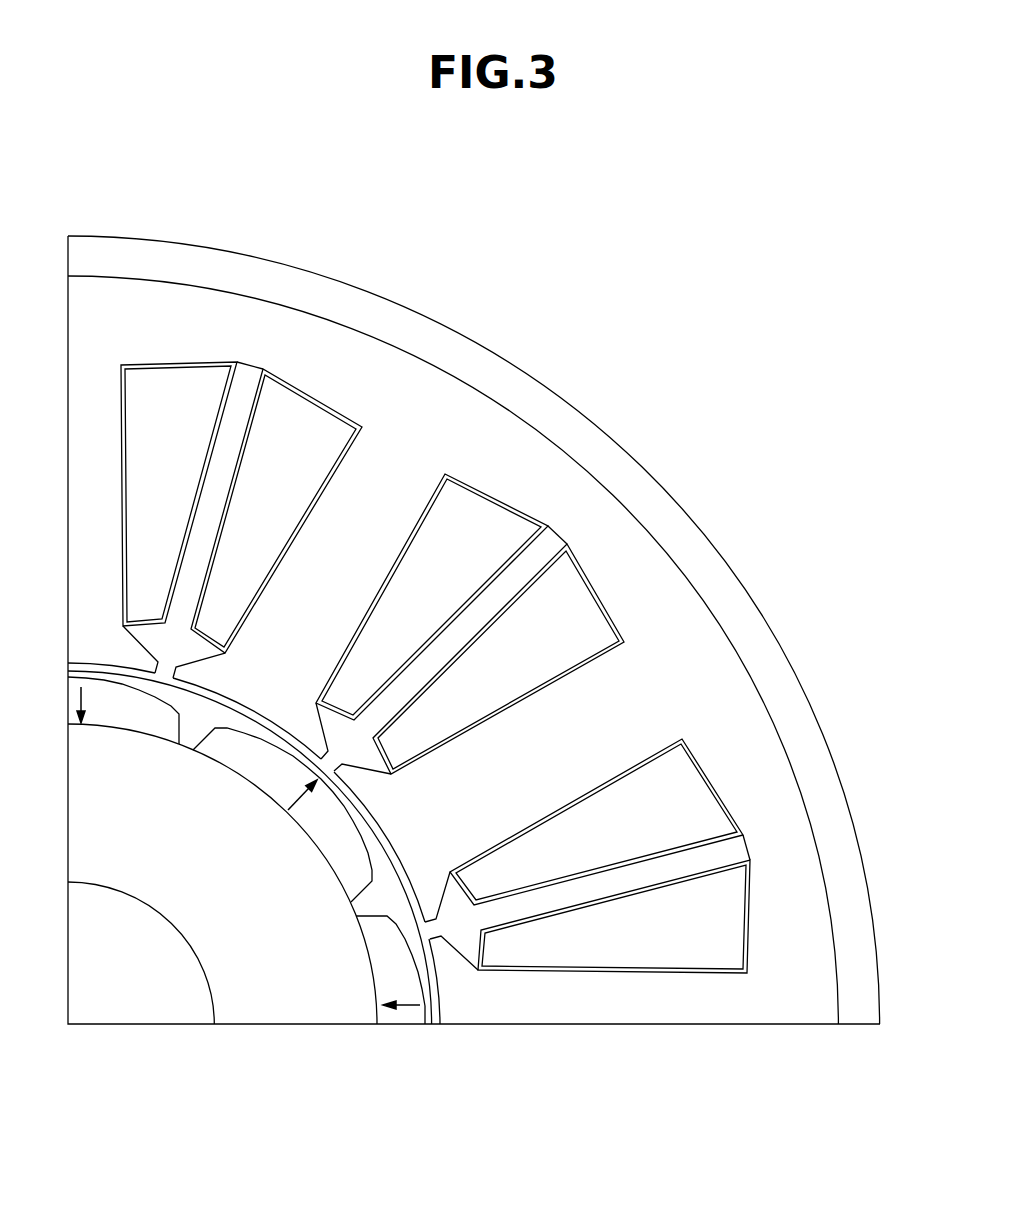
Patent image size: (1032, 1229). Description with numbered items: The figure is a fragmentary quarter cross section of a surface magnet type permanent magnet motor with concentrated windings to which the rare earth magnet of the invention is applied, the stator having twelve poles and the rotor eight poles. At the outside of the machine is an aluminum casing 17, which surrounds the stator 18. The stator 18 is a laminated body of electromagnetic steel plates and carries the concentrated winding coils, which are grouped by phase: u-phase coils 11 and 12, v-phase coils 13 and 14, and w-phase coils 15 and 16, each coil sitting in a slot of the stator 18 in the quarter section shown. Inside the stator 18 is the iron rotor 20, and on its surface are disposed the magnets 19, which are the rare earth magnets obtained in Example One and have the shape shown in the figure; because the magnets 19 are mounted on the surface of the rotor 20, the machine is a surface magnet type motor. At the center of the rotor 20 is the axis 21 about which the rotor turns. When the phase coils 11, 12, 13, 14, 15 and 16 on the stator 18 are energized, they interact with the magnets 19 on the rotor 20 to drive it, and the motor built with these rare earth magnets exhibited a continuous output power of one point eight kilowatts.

The u-phase coil 11 is at (183, 410).
The u-phase coil 12 is at (648, 940).
The v-phase coil 13 is at (680, 808).
The v-phase coil 14 is at (565, 625).
The w-phase coil 15 is at (480, 537).
The w-phase coil 16 is at (303, 440).
The aluminum casing 17 is at (846, 857).
The stator 18 is at (778, 1017).
The magnet 19 is at (396, 1008).
The iron rotor 20 is at (290, 1010).
The axis 21 is at (118, 1007).